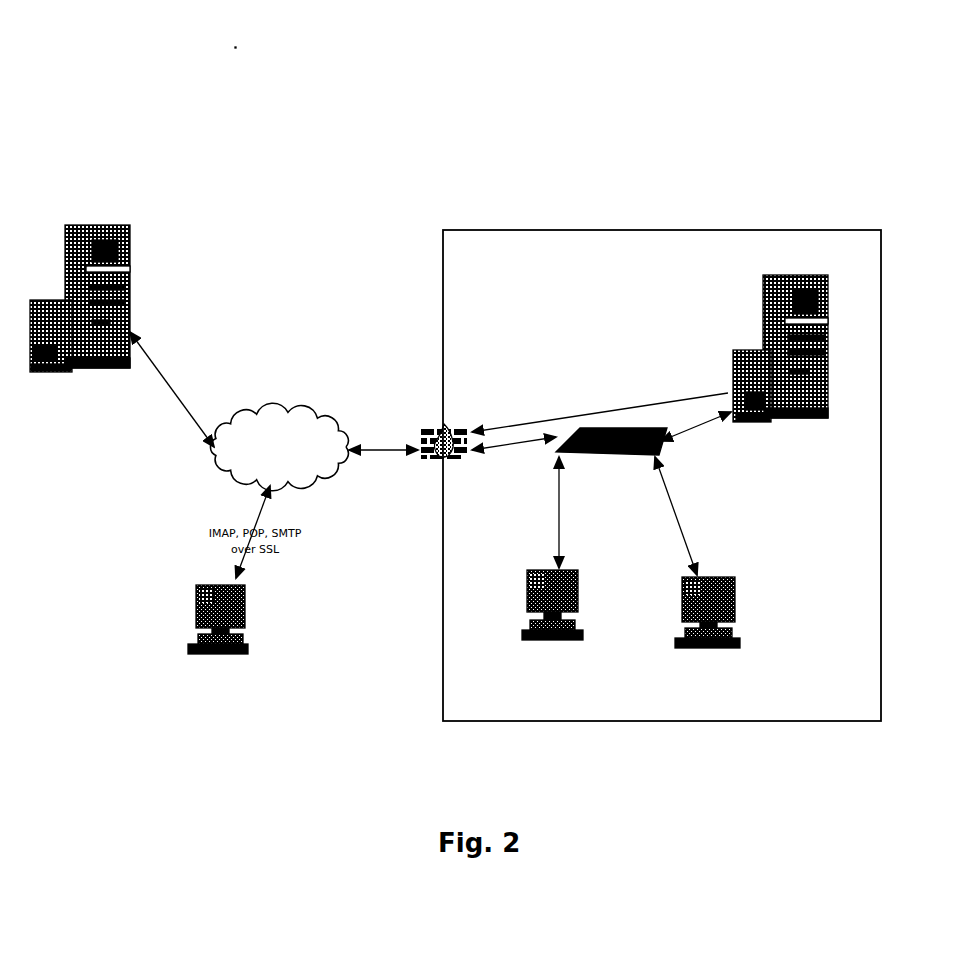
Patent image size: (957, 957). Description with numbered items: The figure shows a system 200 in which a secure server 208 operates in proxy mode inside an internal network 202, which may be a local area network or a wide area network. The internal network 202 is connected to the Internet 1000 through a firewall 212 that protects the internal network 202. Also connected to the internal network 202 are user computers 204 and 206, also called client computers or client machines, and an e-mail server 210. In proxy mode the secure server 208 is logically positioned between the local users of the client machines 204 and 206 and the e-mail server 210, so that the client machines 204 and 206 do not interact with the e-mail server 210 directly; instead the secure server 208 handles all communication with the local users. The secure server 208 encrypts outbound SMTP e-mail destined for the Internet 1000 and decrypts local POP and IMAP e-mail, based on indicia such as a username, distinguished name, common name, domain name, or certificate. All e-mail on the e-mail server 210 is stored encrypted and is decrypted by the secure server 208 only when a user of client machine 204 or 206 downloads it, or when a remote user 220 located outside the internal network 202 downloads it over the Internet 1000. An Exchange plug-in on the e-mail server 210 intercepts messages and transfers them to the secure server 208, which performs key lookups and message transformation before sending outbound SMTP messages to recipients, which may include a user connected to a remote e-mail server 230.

The system 200 is at (300, 44).
The remote e-mail server 230 is at (131, 250).
The Internet 1000 is at (281, 412).
The firewall 212 is at (455, 425).
The internal network 202 is at (717, 228).
The e-mail server 210 is at (763, 320).
The secure server 208 is at (667, 441).
The user computer 204 is at (545, 642).
The user computer 206 is at (738, 600).
The remote user 220 is at (250, 607).